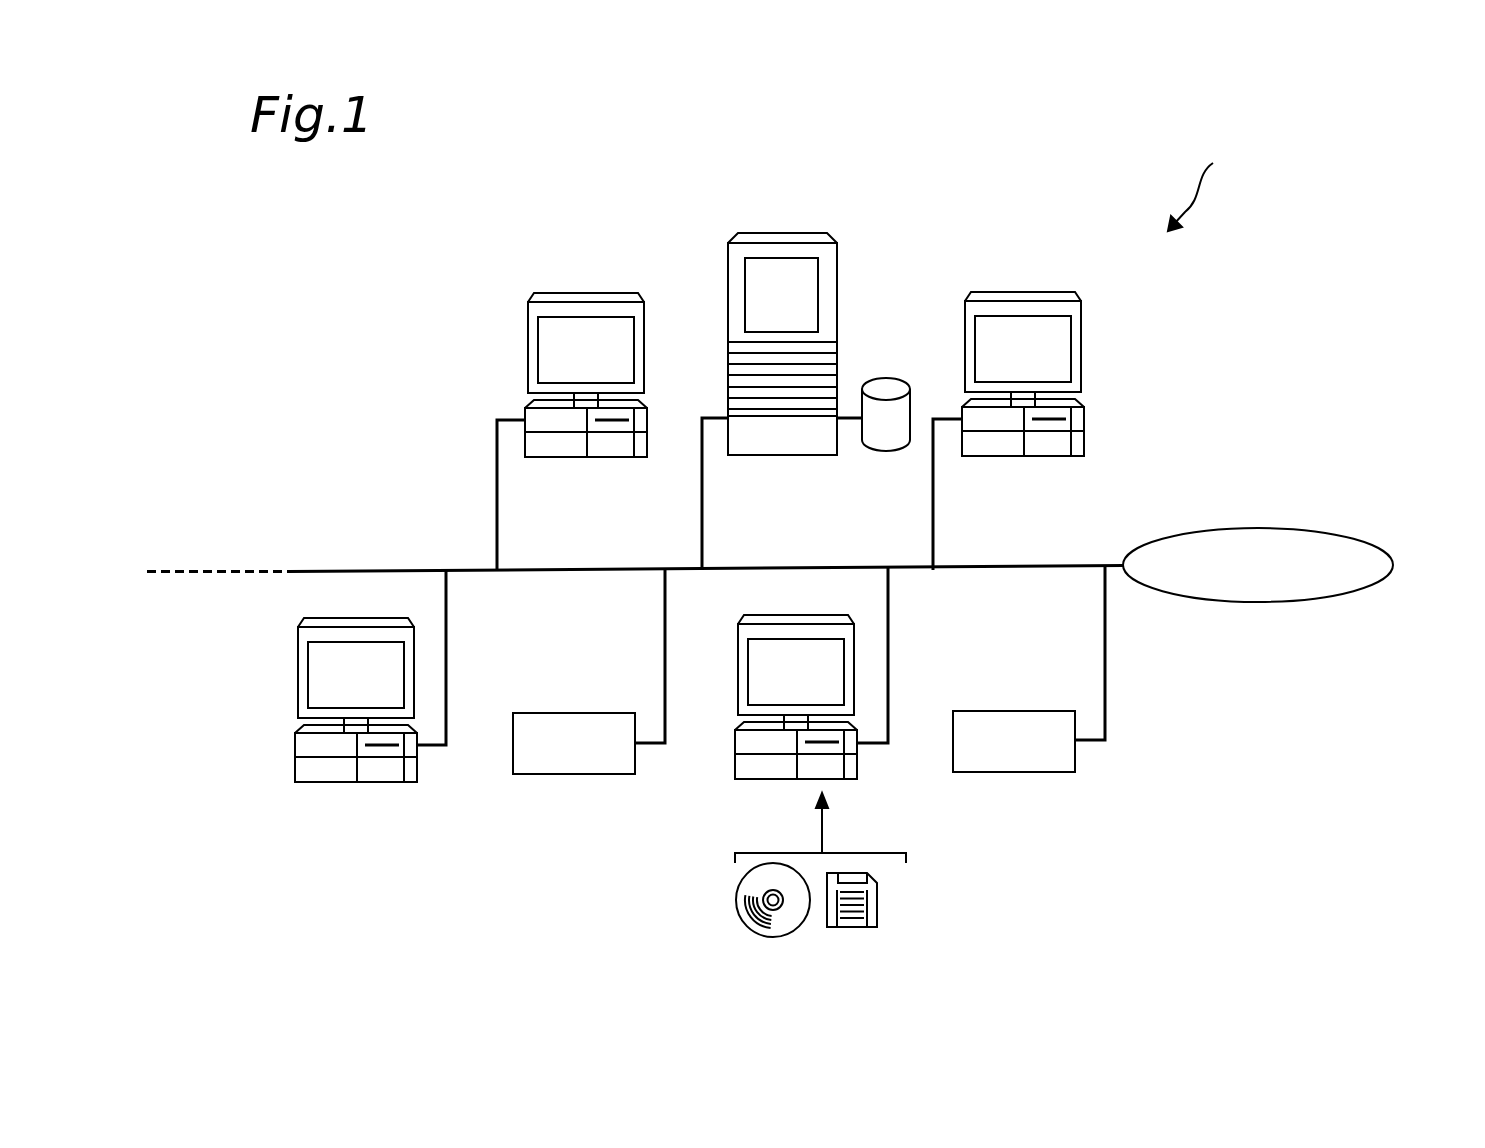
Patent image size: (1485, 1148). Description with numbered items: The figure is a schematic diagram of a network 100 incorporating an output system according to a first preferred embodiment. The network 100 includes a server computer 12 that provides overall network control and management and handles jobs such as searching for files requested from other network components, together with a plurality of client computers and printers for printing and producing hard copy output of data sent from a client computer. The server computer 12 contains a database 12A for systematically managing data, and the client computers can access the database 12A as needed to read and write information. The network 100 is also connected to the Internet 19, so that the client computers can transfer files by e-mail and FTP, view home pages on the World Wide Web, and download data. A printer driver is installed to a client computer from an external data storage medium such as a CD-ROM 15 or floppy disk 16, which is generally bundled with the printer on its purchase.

The server computer 12 is at (783, 233).
The database 12A is at (888, 451).
The CD-ROM 15 is at (737, 900).
The floppy disk 16 is at (877, 902).
The Internet 19 is at (1393, 565).
The network 100 is at (1216, 189).